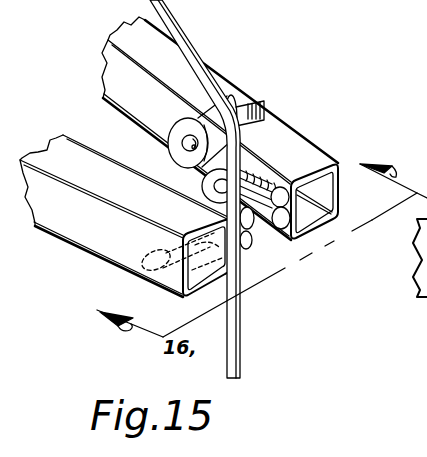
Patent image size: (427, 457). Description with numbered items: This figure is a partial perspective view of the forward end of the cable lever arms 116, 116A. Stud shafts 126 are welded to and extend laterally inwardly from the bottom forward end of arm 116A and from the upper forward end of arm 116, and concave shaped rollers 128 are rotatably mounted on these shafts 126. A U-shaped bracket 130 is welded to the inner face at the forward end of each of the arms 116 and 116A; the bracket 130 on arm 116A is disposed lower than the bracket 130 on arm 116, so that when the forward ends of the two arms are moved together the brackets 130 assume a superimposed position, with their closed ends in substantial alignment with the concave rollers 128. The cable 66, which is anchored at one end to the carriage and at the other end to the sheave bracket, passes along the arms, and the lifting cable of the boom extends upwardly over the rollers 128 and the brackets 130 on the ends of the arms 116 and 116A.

The cable 66 is at (187, 33).
The cable lever arm 116 is at (288, 145).
The cable lever arm 116A is at (113, 253).
The stud shaft 126 is at (247, 100).
The concave shaped roller 128 is at (168, 135).
The U-shaped bracket 130 is at (283, 228).